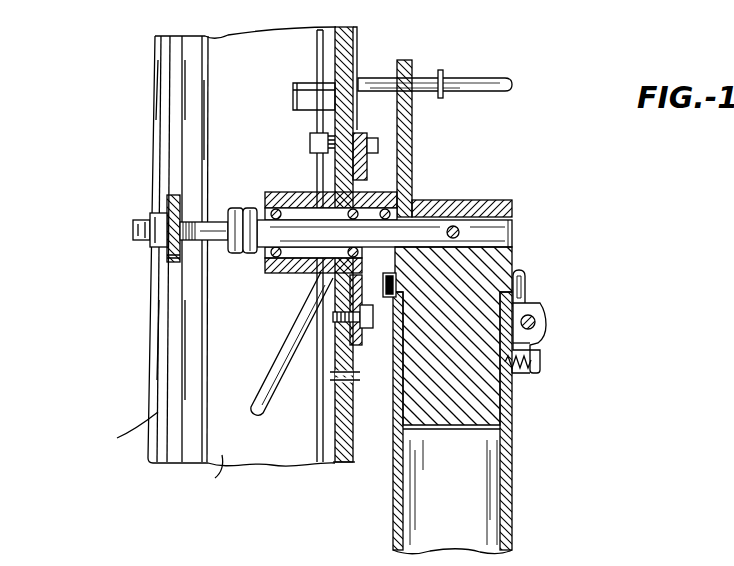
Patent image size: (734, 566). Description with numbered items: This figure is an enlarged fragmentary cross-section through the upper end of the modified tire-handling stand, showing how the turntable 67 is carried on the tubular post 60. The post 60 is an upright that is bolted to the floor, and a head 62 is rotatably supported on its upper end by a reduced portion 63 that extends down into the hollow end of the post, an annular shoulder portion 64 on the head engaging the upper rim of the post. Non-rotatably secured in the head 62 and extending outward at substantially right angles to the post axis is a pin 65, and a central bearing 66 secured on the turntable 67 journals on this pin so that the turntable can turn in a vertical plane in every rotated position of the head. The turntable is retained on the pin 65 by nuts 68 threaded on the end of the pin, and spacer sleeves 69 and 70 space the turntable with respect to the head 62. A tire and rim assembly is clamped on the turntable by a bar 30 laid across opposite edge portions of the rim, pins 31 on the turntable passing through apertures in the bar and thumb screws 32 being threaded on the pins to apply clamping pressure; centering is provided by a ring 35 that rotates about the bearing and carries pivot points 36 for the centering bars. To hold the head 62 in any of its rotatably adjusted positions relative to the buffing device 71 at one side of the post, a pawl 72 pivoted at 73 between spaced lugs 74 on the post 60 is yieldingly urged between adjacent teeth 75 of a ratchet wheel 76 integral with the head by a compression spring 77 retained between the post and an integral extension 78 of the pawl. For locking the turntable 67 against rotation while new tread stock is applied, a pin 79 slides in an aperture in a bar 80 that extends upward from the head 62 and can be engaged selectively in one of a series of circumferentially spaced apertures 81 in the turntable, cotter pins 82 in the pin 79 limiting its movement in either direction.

The bar 30 is at (180, 262).
The pin 31 is at (142, 241).
The thumb screw 32 is at (168, 205).
The ring 35 is at (315, 342).
The pivot point 36 is at (357, 172).
The tubular post 60 is at (510, 512).
The head 62 is at (512, 205).
The reduced portion 63 is at (492, 392).
The annular shoulder portion 64 is at (393, 302).
The pin 65 is at (299, 218).
The central bearing 66 is at (292, 273).
The turntable 67 is at (337, 462).
The nut 68 is at (238, 256).
The spacer sleeve 69 is at (254, 256).
The spacer sleeve 70 is at (383, 212).
The buffing device 71 is at (278, 374).
The pawl 72 is at (540, 302).
The pivot 73 is at (540, 325).
The lug 74 is at (545, 343).
The tooth 75 is at (385, 283).
The ratchet wheel 76 is at (519, 276).
The compression spring 77 is at (531, 374).
The integral extension 78 is at (541, 355).
The pin 79 is at (494, 80).
The bar 80 is at (406, 116).
The aperture 81 is at (351, 78).
The cotter pin 82 is at (397, 64).